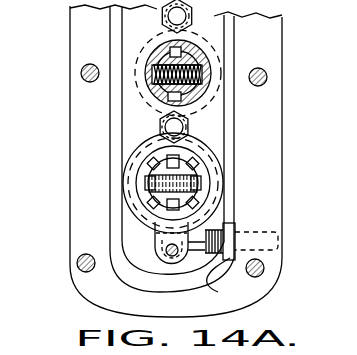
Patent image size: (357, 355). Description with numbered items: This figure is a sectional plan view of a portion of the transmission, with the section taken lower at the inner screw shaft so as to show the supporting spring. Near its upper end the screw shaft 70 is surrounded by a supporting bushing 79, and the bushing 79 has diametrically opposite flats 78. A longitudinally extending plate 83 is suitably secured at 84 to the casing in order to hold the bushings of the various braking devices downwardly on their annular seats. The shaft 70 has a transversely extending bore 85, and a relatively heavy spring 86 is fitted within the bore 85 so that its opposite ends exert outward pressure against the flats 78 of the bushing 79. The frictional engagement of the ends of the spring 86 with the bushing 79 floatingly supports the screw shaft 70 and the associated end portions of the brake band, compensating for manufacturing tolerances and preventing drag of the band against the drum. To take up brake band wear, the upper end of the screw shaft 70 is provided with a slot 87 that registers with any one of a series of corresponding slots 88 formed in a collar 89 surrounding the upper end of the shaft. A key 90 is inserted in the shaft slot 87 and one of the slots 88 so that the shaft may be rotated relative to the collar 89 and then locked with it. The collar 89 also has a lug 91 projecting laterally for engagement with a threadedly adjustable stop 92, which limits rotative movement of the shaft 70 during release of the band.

The screw shaft 70 is at (148, 100).
The flats 78 is at (148, 63).
The supporting bushing 79 is at (163, 88).
The plate 83 is at (205, 140).
The securing point 84 is at (190, 124).
The transversely extending bore 85 is at (188, 50).
The spring 86 is at (195, 55).
The slot 87 is at (198, 172).
The slots 88 is at (212, 200).
The collar 89 is at (200, 232).
The key 90 is at (160, 168).
The lug 91 is at (155, 233).
The threadedly adjustable stop 92 is at (228, 281).